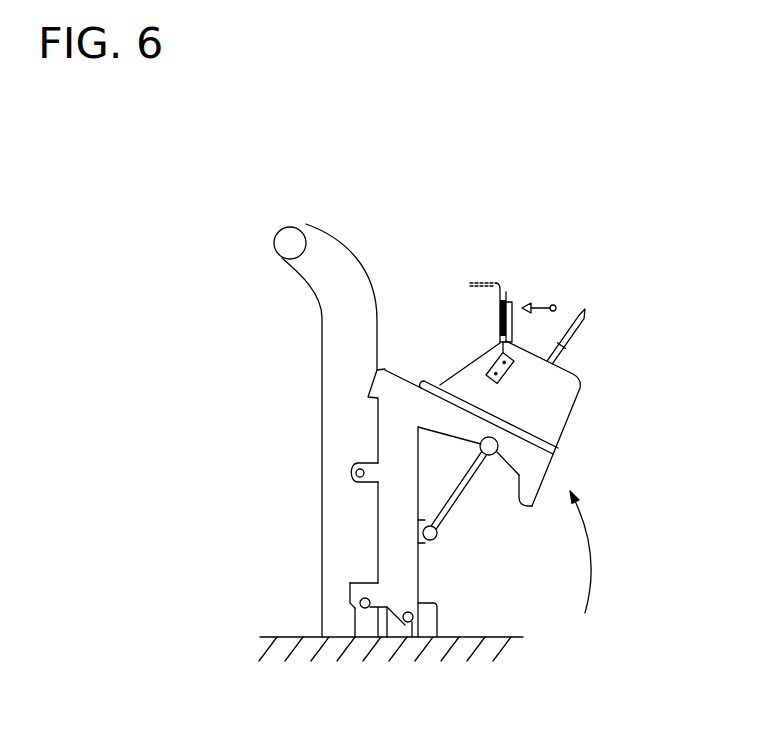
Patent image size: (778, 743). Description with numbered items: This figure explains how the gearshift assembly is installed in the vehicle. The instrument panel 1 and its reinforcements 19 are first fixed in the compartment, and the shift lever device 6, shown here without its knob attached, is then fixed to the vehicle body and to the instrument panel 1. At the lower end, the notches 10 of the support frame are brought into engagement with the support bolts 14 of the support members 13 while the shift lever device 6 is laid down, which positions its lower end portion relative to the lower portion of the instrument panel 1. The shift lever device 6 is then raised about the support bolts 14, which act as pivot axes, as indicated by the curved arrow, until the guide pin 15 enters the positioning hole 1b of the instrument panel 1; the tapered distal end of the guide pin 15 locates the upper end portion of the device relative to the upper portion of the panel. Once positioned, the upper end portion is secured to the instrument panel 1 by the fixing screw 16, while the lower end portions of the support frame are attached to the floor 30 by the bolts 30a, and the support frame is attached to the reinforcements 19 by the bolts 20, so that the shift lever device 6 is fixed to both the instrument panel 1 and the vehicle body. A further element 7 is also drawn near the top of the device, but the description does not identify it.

The instrument panel 1 is at (488, 280).
The positioning hole 1b is at (493, 308).
The shift lever device 6 is at (593, 387).
The pin 7 is at (563, 350).
The notches 10 is at (357, 637).
The support members 13 is at (350, 584).
The support bolts 14 is at (370, 600).
The guide pin 15 is at (498, 326).
The fixing screw 16 is at (556, 306).
The reinforcements 19 is at (340, 352).
The bolts 20 is at (350, 474).
The floor 30 is at (490, 637).
The bolts 30a is at (417, 640).